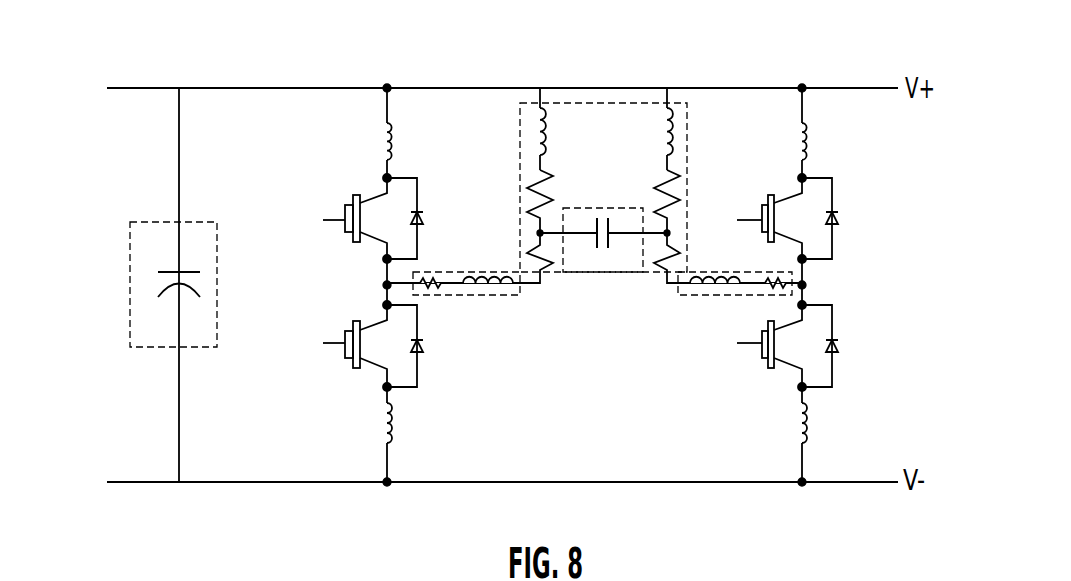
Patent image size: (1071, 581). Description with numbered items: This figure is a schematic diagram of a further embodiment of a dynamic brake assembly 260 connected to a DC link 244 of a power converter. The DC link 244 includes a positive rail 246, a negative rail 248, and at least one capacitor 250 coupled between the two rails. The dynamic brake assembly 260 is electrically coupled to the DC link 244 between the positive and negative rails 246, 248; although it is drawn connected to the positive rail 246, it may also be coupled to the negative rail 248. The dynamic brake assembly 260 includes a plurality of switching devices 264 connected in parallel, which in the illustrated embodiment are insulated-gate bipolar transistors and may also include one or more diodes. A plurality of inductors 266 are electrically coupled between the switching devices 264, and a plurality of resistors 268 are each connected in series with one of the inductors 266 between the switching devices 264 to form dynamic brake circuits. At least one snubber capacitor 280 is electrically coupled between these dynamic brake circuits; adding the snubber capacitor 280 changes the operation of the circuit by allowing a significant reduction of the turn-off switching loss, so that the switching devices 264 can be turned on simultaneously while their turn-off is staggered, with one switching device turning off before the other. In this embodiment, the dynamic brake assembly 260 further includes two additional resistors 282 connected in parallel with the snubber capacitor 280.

The DC link 244 is at (80, 188).
The positive rail 246 is at (323, 88).
The negative rail 248 is at (293, 482).
The capacitor 250 is at (130, 287).
The dynamic brake assembly 260 is at (732, 45).
The switching devices 264 is at (365, 257).
The inductors 266 is at (638, 116).
The resistors 268 is at (643, 195).
The snubber capacitor 280 is at (609, 256).
The additional resistors 282 is at (555, 275).